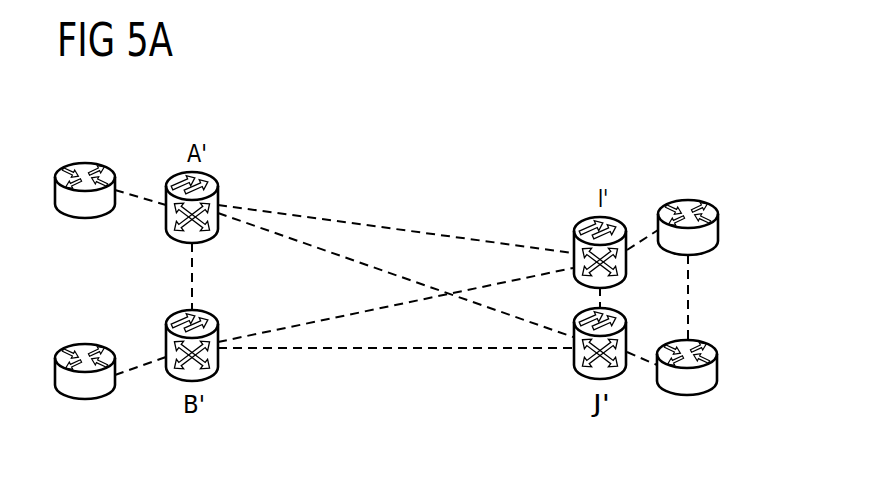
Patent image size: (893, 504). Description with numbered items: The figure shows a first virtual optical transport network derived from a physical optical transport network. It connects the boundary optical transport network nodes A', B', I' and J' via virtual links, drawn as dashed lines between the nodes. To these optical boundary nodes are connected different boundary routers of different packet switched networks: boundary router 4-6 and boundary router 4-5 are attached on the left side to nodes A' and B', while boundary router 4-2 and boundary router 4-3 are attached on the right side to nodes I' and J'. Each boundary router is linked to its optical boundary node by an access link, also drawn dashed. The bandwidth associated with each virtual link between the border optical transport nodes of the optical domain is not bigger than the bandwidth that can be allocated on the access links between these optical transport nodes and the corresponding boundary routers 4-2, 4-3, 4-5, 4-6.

The boundary router 4-6 is at (87, 162).
The boundary router 4-5 is at (87, 343).
The boundary router 4-2 is at (688, 199).
The boundary router 4-3 is at (687, 396).